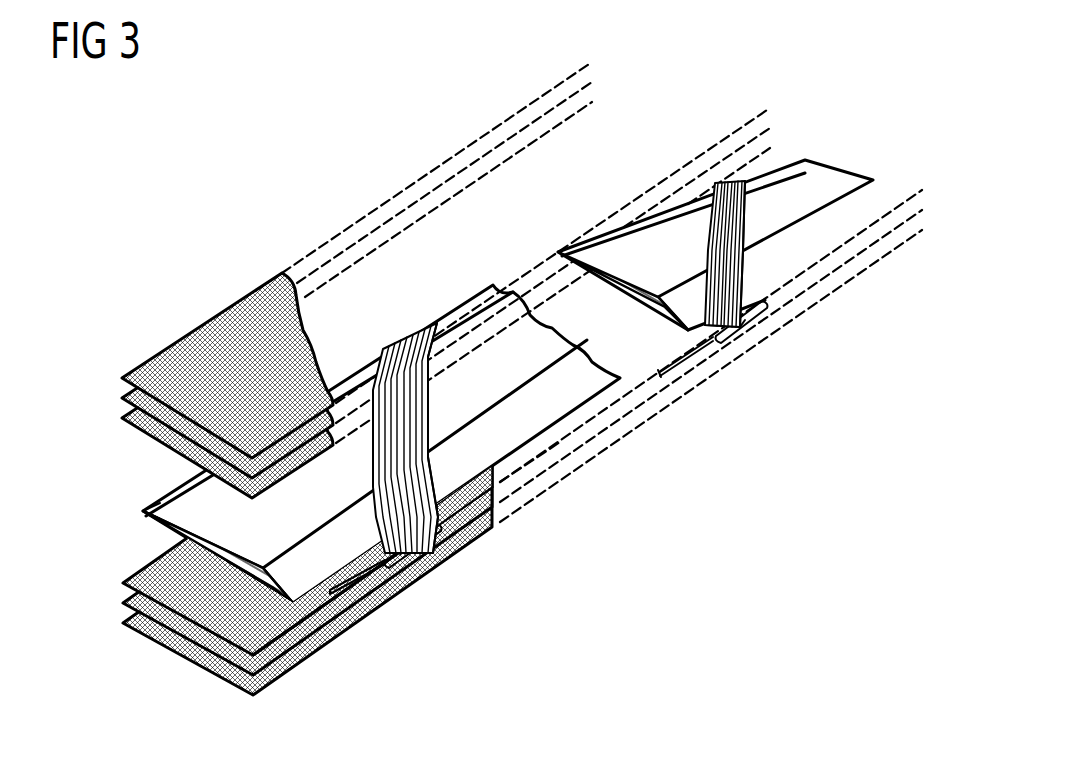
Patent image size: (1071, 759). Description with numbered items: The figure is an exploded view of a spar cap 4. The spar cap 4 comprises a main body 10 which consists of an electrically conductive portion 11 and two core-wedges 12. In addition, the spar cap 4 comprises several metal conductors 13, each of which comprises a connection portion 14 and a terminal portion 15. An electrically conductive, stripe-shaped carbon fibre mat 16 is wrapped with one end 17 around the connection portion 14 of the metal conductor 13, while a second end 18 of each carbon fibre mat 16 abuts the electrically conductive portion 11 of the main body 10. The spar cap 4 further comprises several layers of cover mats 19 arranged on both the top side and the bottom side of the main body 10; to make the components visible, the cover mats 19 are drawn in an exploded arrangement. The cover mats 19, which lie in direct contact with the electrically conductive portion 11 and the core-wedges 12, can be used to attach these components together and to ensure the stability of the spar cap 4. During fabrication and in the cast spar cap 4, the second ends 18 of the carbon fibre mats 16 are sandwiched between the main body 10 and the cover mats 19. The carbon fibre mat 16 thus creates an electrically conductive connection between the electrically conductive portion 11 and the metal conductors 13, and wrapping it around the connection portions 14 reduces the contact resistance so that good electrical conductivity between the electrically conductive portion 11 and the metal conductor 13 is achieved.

The spar cap 4 is at (259, 201).
The main body 10 is at (150, 481).
The electrically conductive portion 11 is at (240, 568).
The core-wedges 12 is at (143, 514).
The metal conductor 13 is at (357, 587).
The connection portion 14 is at (402, 558).
The terminal portion 15 is at (318, 620).
The carbon fibre mat 16 is at (430, 483).
The end 17 is at (420, 530).
The second end 18 is at (410, 346).
The cover mats 19 is at (257, 647).